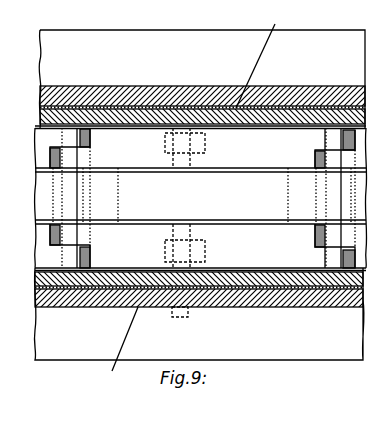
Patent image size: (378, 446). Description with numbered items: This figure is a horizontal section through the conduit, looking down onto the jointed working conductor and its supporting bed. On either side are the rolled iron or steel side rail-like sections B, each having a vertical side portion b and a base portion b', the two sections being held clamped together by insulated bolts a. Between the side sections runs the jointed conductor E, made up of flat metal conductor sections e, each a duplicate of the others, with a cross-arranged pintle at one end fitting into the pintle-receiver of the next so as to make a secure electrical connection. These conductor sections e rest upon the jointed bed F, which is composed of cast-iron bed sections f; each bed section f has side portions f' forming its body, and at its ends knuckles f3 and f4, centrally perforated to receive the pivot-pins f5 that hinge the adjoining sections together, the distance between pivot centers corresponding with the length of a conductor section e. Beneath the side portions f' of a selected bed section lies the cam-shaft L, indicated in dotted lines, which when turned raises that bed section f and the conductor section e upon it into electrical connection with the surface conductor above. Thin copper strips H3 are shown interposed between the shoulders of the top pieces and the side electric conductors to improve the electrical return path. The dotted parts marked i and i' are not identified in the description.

The base portion b' is at (202, 79).
The vertical side portion b is at (206, 188).
The side rail-like section B is at (188, 313).
The copper strip H3 is at (195, 197).
The jointed conductor E is at (201, 198).
The conductor section e is at (200, 196).
The cam-shaft L is at (200, 196).
The bed section f is at (210, 199).
The side portion f' is at (170, 193).
The knuckle f3 is at (50, 158).
The knuckle f4 is at (90, 140).
The pivot-pin f5 is at (78, 159).
The jointed bed F is at (50, 245).
The dashed insert i' is at (185, 198).
The insert pin i is at (171, 196).
The bolt a is at (217, 198).